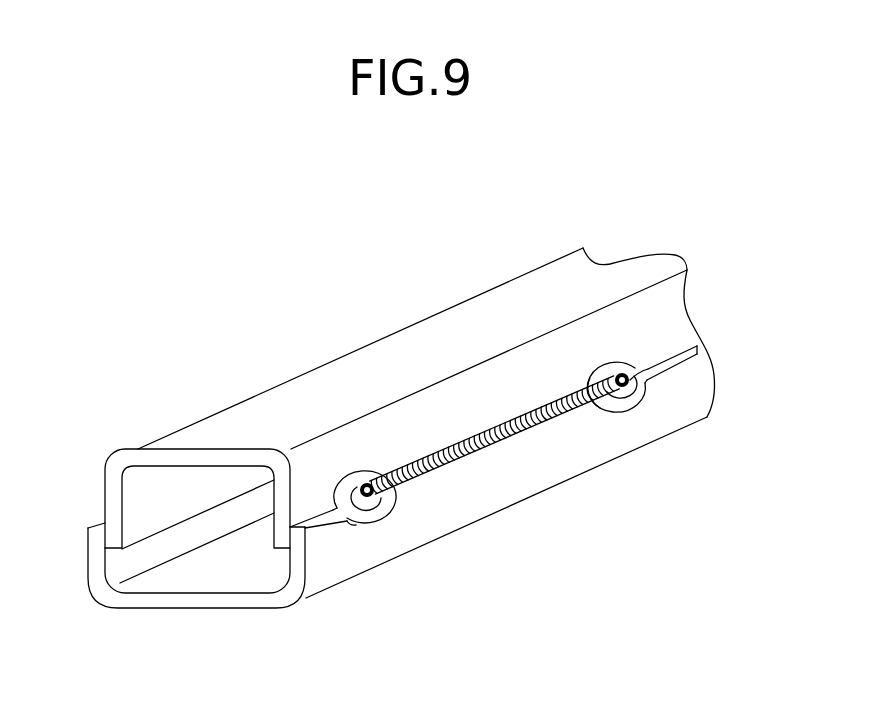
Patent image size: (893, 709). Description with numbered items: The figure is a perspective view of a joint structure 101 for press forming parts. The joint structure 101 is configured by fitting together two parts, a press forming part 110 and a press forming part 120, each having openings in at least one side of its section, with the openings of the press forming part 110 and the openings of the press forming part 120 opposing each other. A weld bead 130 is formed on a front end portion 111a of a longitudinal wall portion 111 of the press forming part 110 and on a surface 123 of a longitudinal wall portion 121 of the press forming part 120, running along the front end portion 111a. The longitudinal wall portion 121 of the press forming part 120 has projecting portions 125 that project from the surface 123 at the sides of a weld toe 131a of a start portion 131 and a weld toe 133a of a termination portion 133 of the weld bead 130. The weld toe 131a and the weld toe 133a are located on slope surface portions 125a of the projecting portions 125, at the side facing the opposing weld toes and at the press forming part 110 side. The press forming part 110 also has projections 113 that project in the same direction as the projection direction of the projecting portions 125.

The joint structure for press forming parts 101 is at (122, 249).
The press forming part 110 is at (197, 607).
The longitudinal wall portion 111 is at (308, 550).
The front end portion 111a is at (673, 359).
The projections 113 is at (372, 532).
The press forming part 120 is at (223, 409).
The longitudinal wall portion 121 is at (301, 490).
The surface 123 is at (473, 417).
The projecting portions 125 is at (360, 472).
The slope surface portions 125a is at (381, 470).
The weld bead 130 is at (474, 459).
The start portion 131 is at (620, 412).
The weld toe 131a is at (636, 390).
The termination portion 133 is at (362, 528).
The weld toe 133a is at (350, 532).